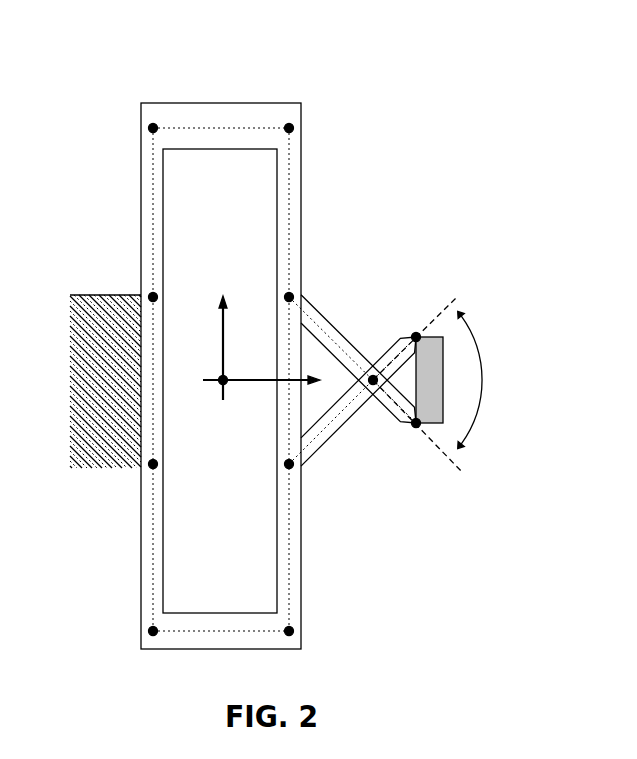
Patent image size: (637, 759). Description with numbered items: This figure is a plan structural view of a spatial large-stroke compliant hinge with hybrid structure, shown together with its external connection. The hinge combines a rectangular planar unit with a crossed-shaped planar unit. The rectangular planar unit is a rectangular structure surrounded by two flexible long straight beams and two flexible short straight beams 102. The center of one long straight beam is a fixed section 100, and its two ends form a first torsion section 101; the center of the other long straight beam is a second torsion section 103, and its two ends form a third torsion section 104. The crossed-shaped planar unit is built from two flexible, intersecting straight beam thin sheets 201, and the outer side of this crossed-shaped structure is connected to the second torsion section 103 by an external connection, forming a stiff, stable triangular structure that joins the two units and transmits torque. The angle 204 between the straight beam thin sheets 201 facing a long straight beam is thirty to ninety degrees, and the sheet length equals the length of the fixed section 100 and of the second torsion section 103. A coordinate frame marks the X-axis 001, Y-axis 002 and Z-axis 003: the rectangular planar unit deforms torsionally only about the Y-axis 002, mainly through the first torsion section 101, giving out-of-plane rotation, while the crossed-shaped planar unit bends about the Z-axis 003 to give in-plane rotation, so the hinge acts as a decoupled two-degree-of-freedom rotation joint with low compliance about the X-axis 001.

The fixed section 100 is at (153, 352).
The first torsion section 101 is at (153, 215).
The flexible short straight beams 102 is at (222, 125).
The second torsion section 103 is at (290, 400).
The third torsion section 104 is at (290, 207).
The X-axis 001 is at (243, 383).
The Y-axis 002 is at (219, 308).
The Z-axis 003 is at (225, 378).
The straight beam thin sheets 201 is at (362, 400).
The angle 204 is at (427, 385).